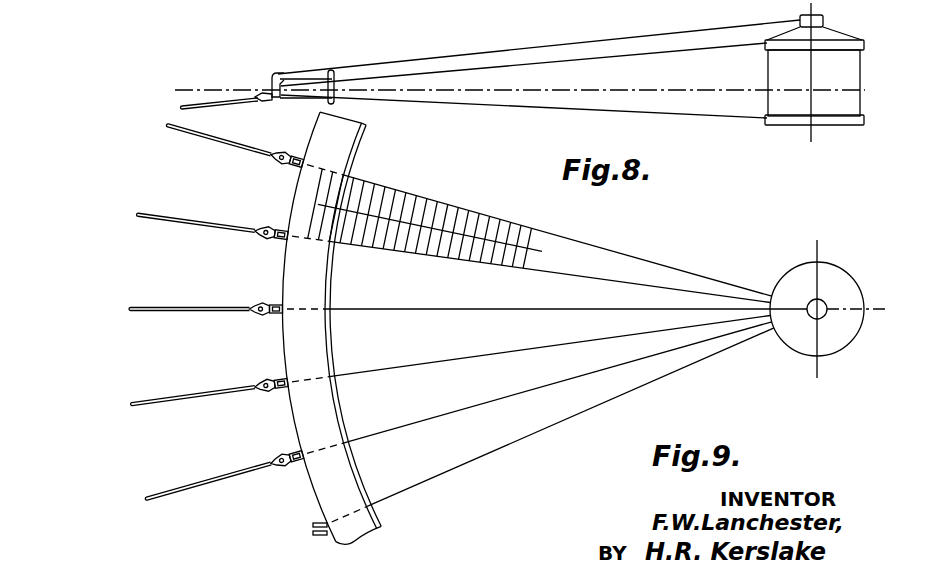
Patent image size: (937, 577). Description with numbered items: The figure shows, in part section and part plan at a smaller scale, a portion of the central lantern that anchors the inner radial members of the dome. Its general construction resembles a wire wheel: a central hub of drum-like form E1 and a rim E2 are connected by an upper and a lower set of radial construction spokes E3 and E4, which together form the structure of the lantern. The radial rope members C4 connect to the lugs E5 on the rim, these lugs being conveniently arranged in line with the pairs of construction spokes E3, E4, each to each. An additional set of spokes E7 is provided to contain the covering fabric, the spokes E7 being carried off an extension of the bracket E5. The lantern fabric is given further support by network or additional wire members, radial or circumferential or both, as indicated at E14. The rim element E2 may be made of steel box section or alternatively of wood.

In FIG. 8, the central hub E1 is at (814, 72).
In FIG. 9, the central hub E1 is at (801, 272).
In FIG. 9, the rim E2 is at (343, 158).
In FIG. 8, the upper construction spokes E3 is at (672, 51).
In FIG. 8, the lower construction spokes E4 is at (716, 114).
In FIG. 8, the lugs E5 is at (274, 80).
In FIG. 9, the lugs E5 is at (296, 156).
In FIG. 8, the additional set of spokes E7 is at (623, 37).
In FIG. 9, the network or additional wire members E14 is at (530, 233).
In FIG. 9, the inner radial members C4 is at (225, 146).